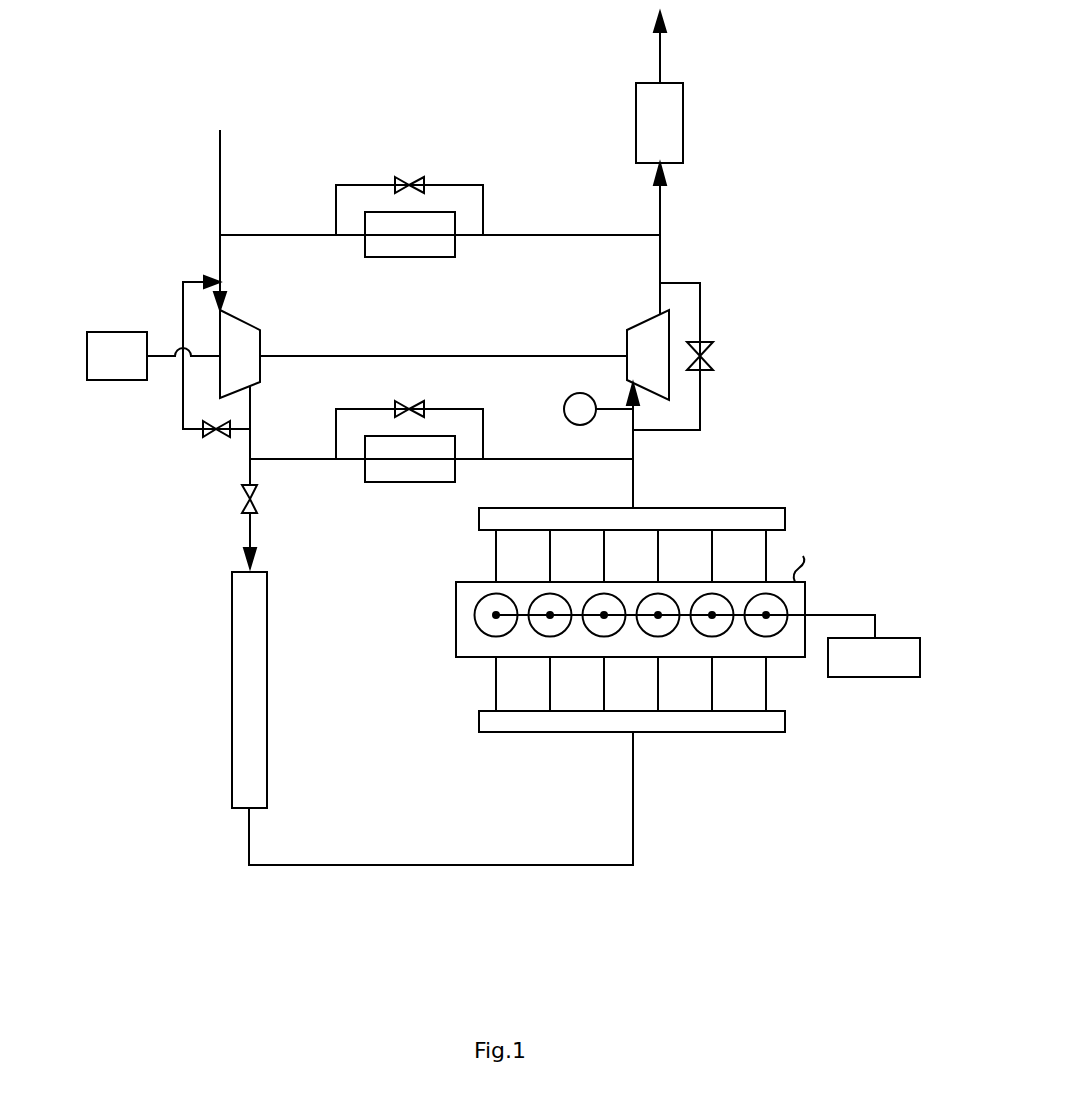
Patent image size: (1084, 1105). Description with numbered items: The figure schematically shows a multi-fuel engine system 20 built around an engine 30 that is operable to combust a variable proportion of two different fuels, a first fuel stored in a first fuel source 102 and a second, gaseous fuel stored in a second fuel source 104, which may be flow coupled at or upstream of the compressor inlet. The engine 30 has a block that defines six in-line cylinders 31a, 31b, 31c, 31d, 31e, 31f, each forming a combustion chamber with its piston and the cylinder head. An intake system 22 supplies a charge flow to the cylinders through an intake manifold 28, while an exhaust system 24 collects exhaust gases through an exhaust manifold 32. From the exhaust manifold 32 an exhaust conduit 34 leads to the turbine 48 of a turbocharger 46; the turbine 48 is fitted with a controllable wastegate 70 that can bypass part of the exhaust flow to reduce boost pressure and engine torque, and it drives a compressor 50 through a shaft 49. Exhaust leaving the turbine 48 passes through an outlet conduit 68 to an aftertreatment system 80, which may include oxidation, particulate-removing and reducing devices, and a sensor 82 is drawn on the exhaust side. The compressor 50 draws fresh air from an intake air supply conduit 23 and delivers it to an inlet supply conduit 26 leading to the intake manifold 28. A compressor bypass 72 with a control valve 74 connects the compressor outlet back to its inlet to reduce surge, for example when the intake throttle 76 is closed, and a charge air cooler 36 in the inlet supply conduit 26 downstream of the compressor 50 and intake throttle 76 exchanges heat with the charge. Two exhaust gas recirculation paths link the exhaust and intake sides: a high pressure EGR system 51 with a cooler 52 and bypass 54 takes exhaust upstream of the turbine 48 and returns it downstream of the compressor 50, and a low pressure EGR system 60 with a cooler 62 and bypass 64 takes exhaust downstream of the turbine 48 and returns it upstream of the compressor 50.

The multi-fuel engine system 20 is at (640, 591).
The intake system 22 is at (207, 797).
The intake air supply conduit 23 is at (221, 199).
The exhaust system 24 is at (722, 238).
The inlet supply conduit 26 is at (634, 788).
The intake manifold 28 is at (765, 733).
The engine 30 is at (456, 605).
The cylinder 31a is at (772, 630).
The cylinder 31b is at (707, 604).
The cylinder 31c is at (662, 630).
The cylinder 31d is at (601, 604).
The cylinder 31e is at (557, 630).
The cylinder 31f is at (488, 604).
The exhaust manifold 32 is at (765, 507).
The exhaust conduit 34 is at (634, 473).
The charge air cooler 36 is at (232, 670).
The turbocharger 46 is at (420, 326).
The turbine 48 is at (648, 317).
The shaft 49 is at (332, 355).
The compressor 50 is at (240, 354).
The high pressure EGR system 51 is at (441, 442).
The cooler 52 is at (455, 462).
The bypass 54 is at (466, 409).
The low pressure EGR system 60 is at (440, 189).
The cooler 62 is at (455, 238).
The bypass 64 is at (466, 185).
The outlet conduit 68 is at (661, 200).
The wastegate 70 is at (700, 300).
The compressor bypass 72 is at (183, 410).
The control valve 74 is at (216, 437).
The intake throttle 76 is at (244, 506).
The aftertreatment system 80 is at (683, 95).
The sensor 82 is at (565, 409).
The first fuel source 102 is at (895, 638).
The second fuel source 104 is at (107, 332).